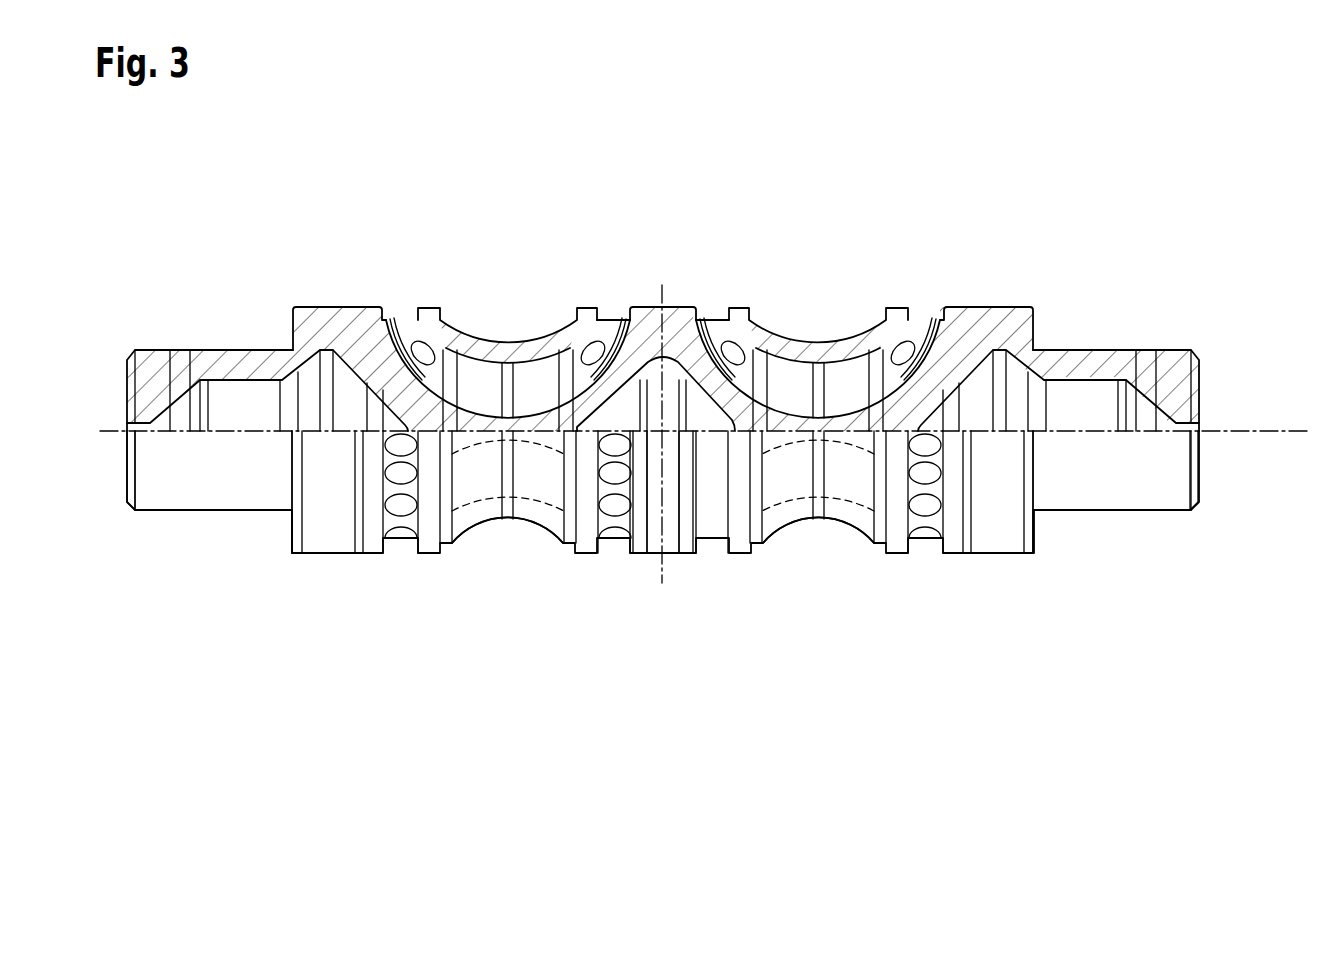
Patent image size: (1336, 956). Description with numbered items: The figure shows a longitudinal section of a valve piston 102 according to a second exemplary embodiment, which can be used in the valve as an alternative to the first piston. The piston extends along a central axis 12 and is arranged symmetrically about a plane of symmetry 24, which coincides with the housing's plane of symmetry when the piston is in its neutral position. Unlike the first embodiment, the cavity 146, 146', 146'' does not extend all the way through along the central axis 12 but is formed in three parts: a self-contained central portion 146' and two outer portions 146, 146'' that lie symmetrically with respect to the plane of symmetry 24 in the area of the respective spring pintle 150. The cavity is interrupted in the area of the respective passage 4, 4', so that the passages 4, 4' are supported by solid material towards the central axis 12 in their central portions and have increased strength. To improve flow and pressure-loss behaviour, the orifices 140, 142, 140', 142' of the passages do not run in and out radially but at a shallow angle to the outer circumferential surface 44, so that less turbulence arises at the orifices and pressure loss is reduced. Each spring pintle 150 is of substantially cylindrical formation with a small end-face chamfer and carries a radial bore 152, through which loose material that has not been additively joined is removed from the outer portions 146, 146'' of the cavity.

The valve piston 102 is at (1212, 244).
The central axis 12 is at (1262, 430).
The plane of symmetry 24 is at (662, 575).
The radial bore 152 is at (182, 362).
The spring pintle 150 is at (247, 365).
The outer circumferential surface 44 is at (341, 290).
The orifice 142 is at (508, 382).
The orifice 142' is at (833, 382).
The orifice 140 is at (630, 382).
The orifice 140' is at (710, 382).
The outer portion of cavity 146 is at (245, 517).
The central portion of cavity 146' is at (680, 513).
The outer portion of cavity 146'' is at (1080, 518).
The passage 4 is at (508, 541).
The passage 4' is at (818, 541).